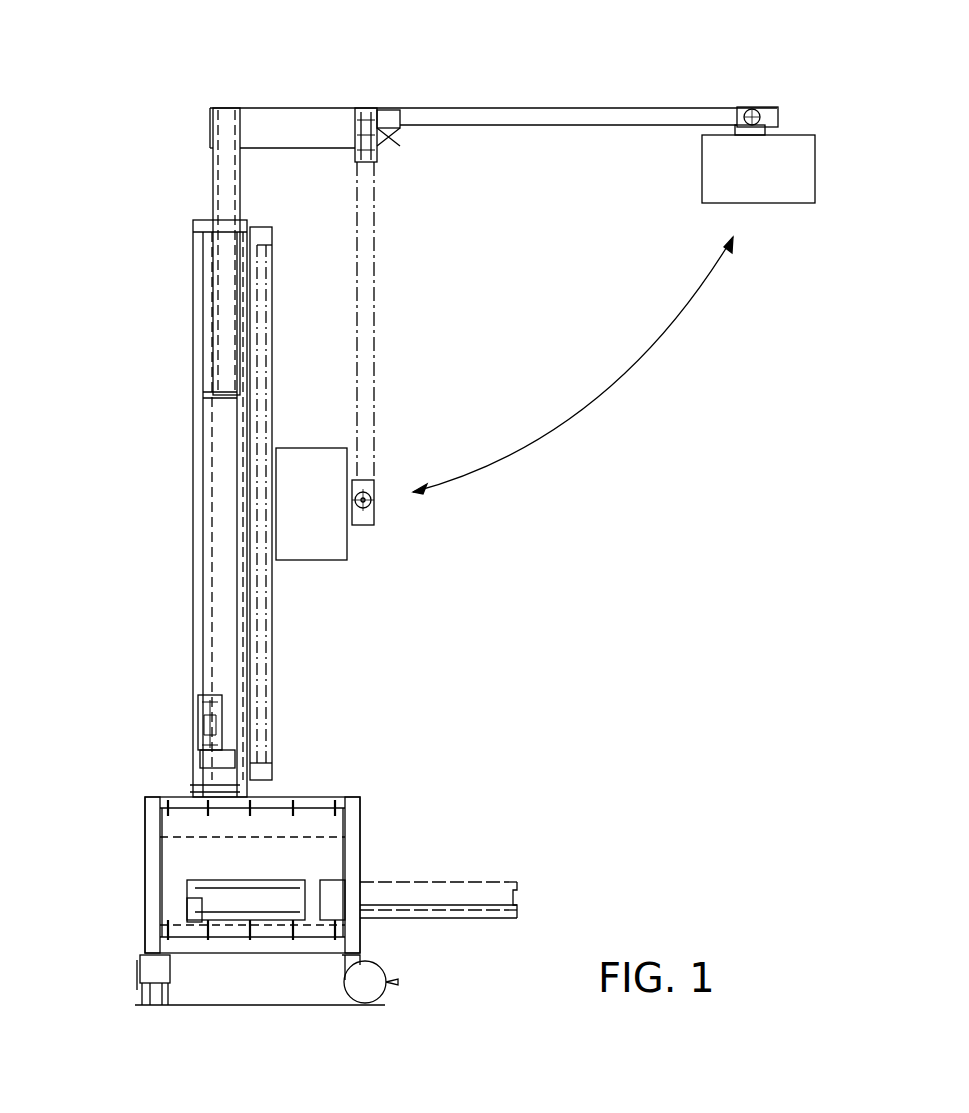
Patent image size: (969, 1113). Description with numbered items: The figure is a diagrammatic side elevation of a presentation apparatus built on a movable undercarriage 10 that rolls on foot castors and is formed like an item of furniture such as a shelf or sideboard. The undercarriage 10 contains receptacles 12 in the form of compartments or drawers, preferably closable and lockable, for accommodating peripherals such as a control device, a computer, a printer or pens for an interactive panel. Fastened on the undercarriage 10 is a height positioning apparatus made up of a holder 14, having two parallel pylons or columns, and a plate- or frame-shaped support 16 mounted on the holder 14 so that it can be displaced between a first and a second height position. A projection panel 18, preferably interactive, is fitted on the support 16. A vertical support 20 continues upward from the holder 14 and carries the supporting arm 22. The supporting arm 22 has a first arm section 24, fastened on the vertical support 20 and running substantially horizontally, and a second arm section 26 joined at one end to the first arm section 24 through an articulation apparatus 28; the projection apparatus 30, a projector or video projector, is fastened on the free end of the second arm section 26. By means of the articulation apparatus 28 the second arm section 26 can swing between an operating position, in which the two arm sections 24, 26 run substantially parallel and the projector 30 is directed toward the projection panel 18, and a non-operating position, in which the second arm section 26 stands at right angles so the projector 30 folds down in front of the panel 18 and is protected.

The movable undercarriage 10 is at (148, 830).
The receptacle 12 is at (500, 893).
The holder 14 is at (193, 480).
The support 16 is at (215, 592).
The projection panel 18 is at (263, 652).
The vertical support 20 is at (225, 168).
The supporting arm 22 is at (444, 105).
The first arm section 24 is at (278, 130).
The second arm section 26 is at (565, 118).
The articulation apparatus 28 is at (375, 133).
The projection apparatus 30 is at (800, 182).